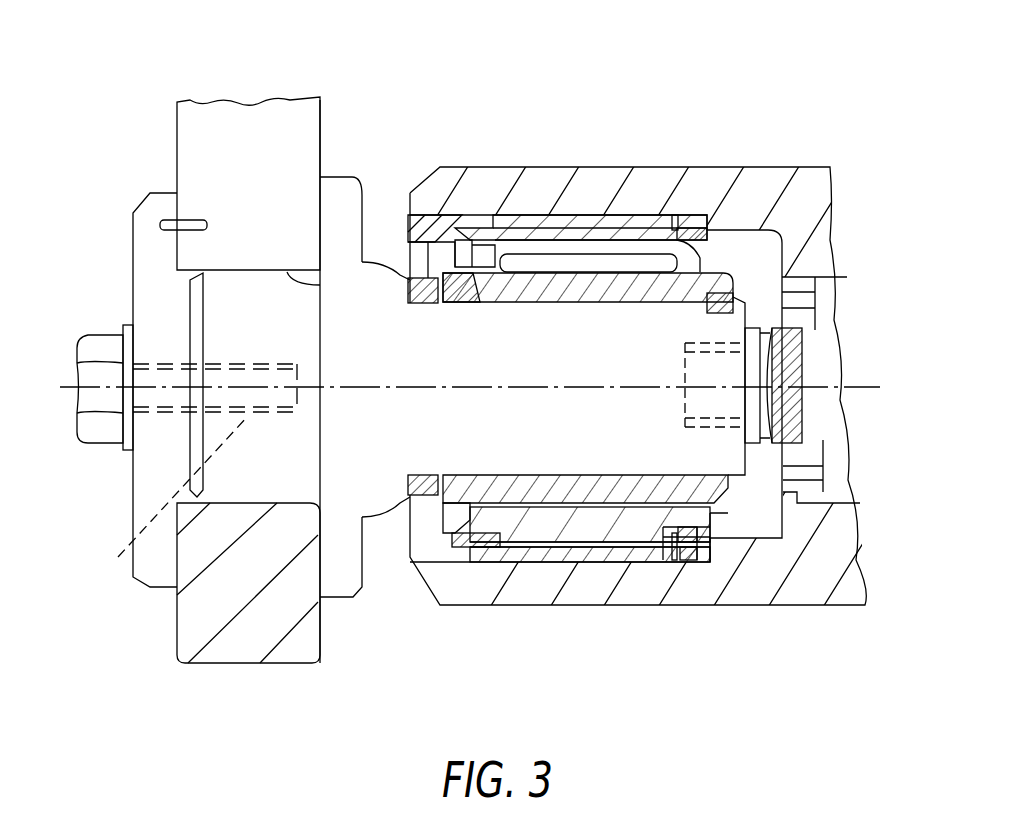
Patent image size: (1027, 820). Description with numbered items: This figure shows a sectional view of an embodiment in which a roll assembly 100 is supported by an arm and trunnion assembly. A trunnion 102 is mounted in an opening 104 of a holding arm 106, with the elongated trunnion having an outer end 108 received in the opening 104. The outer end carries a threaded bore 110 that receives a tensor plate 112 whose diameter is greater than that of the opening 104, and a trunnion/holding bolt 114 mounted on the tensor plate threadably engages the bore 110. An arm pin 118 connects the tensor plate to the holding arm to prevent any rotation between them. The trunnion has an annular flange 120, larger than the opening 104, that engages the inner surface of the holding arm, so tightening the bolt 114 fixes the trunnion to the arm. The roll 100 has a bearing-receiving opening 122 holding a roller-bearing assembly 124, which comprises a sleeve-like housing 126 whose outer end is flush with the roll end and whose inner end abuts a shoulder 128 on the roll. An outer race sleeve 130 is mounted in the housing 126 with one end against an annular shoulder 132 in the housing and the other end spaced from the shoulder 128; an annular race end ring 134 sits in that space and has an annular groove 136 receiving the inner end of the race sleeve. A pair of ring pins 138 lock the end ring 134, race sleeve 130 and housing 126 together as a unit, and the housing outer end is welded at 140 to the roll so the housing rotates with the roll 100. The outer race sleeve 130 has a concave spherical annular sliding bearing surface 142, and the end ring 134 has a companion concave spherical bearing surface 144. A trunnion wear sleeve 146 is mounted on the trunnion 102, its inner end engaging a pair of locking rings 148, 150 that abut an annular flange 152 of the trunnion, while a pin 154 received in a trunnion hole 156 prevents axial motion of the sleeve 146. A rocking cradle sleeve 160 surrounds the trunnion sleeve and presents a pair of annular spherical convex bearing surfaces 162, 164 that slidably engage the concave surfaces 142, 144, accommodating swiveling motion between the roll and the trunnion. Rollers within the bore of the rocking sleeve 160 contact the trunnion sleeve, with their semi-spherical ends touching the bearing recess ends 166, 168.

The roll assembly 100 is at (658, 180).
The trunnion 102 is at (570, 262).
The opening 104 is at (337, 255).
The holding arm 106 is at (320, 108).
The outer end 108 is at (240, 503).
The threaded bore 110 is at (127, 547).
The tensor plate 112 is at (132, 480).
The trunnion/holding bolt 114 is at (87, 443).
The arm pin 118 is at (165, 222).
The annular flange 120 is at (337, 597).
The bearing-receiving opening 122 is at (460, 200).
The roller-bearing assembly 124 is at (505, 228).
The sleeve-like housing 126 is at (683, 553).
The shoulder 128 is at (700, 553).
The outer race sleeve 130 is at (494, 535).
The annular shoulder 132 is at (470, 540).
The annular race end ring 134 is at (785, 645).
The annular groove 136 is at (683, 555).
The ring pins 138 is at (680, 212).
The weld 140 is at (398, 568).
The concave spherical annular sliding bearing surface 142 is at (500, 515).
The annular concave spherical bearing surface 144 is at (678, 517).
The trunnion wear sleeve 146 is at (596, 293).
The locking ring 148 is at (433, 300).
The locking ring 150 is at (432, 478).
The annular flange 152 is at (413, 302).
The pin 154 is at (735, 295).
The trunnion hole 156 is at (735, 295).
The rocking cradle sleeve 160 is at (560, 517).
The annular spherical convex bearing surface 162 is at (487, 505).
The annular spherical convex bearing surface 164 is at (537, 257).
The bearing recess end 166 is at (685, 270).
The bearing recess end 168 is at (497, 262).